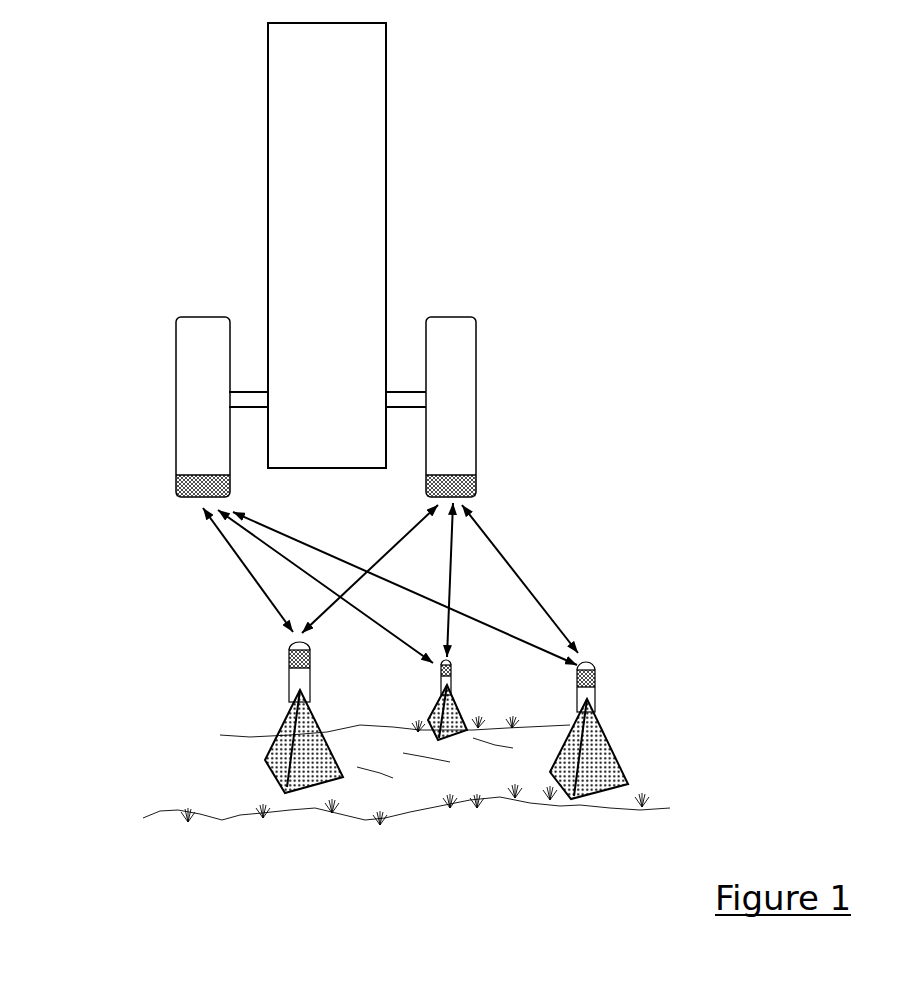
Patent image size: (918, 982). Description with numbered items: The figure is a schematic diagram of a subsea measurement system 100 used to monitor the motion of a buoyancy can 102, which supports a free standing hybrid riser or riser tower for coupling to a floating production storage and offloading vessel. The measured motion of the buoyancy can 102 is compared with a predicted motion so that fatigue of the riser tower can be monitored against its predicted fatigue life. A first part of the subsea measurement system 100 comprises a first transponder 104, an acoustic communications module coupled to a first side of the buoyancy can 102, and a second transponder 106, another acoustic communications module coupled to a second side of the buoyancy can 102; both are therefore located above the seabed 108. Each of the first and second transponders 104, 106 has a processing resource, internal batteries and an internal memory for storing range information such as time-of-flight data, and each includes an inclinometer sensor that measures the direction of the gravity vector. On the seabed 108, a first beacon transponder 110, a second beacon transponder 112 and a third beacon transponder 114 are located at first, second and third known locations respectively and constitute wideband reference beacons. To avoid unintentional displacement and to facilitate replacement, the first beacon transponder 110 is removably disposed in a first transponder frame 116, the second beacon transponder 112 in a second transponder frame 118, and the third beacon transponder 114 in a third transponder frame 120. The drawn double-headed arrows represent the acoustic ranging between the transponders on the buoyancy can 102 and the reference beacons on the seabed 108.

The subsea measurement system 100 is at (598, 499).
The buoyancy can 102 is at (349, 257).
The first transponder 104 is at (224, 409).
The second transponder 106 is at (472, 409).
The seabed 108 is at (173, 825).
The first beacon transponder 110 is at (298, 683).
The second beacon transponder 112 is at (448, 684).
The third beacon transponder 114 is at (592, 692).
The first transponder frame 116 is at (277, 765).
The second transponder frame 118 is at (430, 720).
The third transponder frame 120 is at (607, 773).